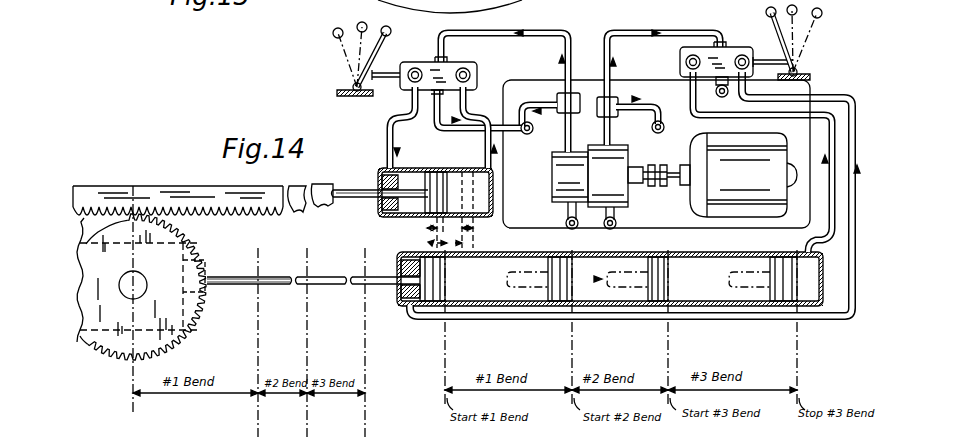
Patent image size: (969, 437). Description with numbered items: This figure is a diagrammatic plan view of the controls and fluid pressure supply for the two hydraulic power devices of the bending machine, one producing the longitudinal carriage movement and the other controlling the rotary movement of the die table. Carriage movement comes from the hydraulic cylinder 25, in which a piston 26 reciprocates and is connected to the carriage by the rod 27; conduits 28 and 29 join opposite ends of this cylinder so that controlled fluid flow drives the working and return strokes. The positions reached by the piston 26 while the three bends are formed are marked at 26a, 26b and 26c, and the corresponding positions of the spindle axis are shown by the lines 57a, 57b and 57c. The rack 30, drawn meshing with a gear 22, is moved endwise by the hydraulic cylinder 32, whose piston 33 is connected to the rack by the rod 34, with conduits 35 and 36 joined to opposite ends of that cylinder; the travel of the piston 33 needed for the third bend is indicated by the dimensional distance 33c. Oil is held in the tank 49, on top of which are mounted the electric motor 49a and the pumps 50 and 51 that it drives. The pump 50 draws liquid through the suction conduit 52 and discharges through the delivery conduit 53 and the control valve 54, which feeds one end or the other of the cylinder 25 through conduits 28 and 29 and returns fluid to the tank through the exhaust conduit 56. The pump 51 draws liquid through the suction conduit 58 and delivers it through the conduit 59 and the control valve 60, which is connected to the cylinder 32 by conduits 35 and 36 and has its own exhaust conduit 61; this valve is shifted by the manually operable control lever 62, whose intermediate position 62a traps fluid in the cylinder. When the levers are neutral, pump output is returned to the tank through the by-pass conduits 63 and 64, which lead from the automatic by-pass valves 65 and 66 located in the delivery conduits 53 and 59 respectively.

The gear 22 is at (182, 343).
The hydraulic cylinder 25 is at (755, 320).
The piston 26 is at (449, 318).
The piston position 26a is at (577, 318).
The piston position 26b is at (671, 318).
The piston position 26c is at (798, 318).
The rod 27 is at (313, 271).
The conduit 28 is at (857, 318).
The conduit 29 is at (853, 113).
The rack 30 is at (242, 210).
The hydraulic cylinder 32 is at (411, 169).
The piston 33 is at (384, 214).
The dimensional distance 33c is at (500, 241).
The rod 34 is at (361, 189).
The conduit 35 is at (380, 143).
The conduit 36 is at (482, 150).
The tank 49 is at (812, 90).
The electric motor 49a is at (692, 205).
The pump 50 is at (618, 158).
The pump 51 is at (566, 174).
The suction conduit 52 is at (618, 219).
The delivery conduit 53 is at (665, 36).
The control valve 54 is at (740, 48).
The exhaust conduit 56 is at (716, 91).
The spindle axis position line 57a is at (262, 345).
The spindle axis position line 57b is at (310, 345).
The spindle axis position line 57c is at (367, 345).
The suction conduit 58 is at (565, 219).
The conduit 59 is at (550, 34).
The control valve 60 is at (454, 65).
The exhaust conduit 61 is at (490, 125).
The control lever 62 is at (388, 36).
The intermediate position 62a is at (360, 27).
The by-pass conduit 63 is at (641, 102).
The by-pass conduit 64 is at (522, 104).
The automatic by-pass valve 65 is at (604, 82).
The automatic by-pass valve 66 is at (562, 100).